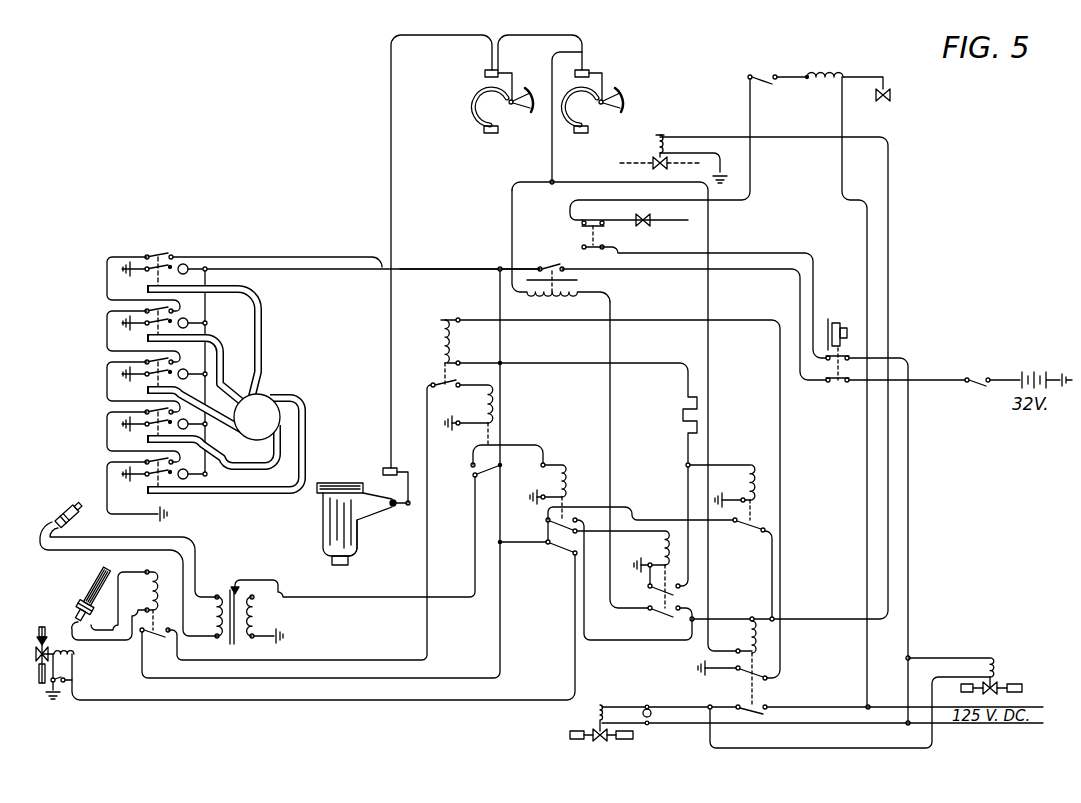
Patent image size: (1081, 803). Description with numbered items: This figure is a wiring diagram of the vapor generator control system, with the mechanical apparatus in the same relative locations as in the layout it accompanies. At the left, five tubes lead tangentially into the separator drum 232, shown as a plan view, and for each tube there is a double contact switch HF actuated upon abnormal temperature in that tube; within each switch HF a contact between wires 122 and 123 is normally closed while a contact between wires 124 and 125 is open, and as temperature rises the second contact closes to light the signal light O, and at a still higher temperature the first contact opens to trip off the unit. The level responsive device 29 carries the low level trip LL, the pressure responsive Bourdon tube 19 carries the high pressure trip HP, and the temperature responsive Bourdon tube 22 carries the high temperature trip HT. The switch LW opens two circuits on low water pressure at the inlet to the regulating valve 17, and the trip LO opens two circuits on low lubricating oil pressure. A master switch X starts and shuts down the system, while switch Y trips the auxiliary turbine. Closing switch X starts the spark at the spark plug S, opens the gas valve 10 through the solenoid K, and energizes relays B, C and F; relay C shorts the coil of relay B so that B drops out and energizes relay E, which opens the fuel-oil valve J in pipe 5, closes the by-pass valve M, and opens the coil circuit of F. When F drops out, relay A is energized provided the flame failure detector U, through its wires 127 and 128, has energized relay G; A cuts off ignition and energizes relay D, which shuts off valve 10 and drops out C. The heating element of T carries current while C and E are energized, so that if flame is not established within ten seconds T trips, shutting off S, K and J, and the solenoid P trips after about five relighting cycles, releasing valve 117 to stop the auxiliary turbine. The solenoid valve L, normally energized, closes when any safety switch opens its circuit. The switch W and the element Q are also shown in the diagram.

The pipe 5 is at (583, 740).
The solenoid actuated valve 10 is at (40, 656).
The regulating valve 17 is at (644, 220).
The pressure responsive device 19 is at (566, 116).
The temperature responsive device 22 is at (476, 100).
The liquid level responsive means 29 is at (362, 529).
The valve 117 is at (881, 101).
The wire 122 is at (244, 261).
The wire 123 is at (101, 261).
The wire 124 is at (291, 271).
The wire 125 is at (145, 272).
The wire 127 is at (117, 603).
The wire 128 is at (109, 641).
The separating chamber 232 is at (268, 396).
The high temperature trip HT is at (482, 74).
The high pressure trip HP is at (590, 70).
The solenoid actuated valve L is at (673, 154).
The low water pressure switch LW is at (704, 277).
The timing trip relay T is at (561, 246).
The second switch Y is at (688, 133).
The solenoid P is at (825, 61).
The relay F is at (596, 498).
The relay A is at (494, 431).
The relay D is at (631, 551).
The relay C is at (634, 575).
The relay B is at (731, 541).
The relay E is at (735, 665).
The low lubricating oil pressure trip LO is at (845, 350).
The master switch X is at (934, 396).
The solenoid operated by-pass valve M is at (979, 675).
The fuel-oil valve J is at (607, 705).
The lamp Q is at (653, 702).
The spark plug S is at (128, 565).
The flame failure detector U is at (86, 594).
The relay G is at (160, 603).
The solenoid K is at (75, 656).
The switch W is at (75, 676).
The low level trip LL is at (363, 510).
The double contact switch HF is at (147, 256).
The signal light O is at (188, 264).